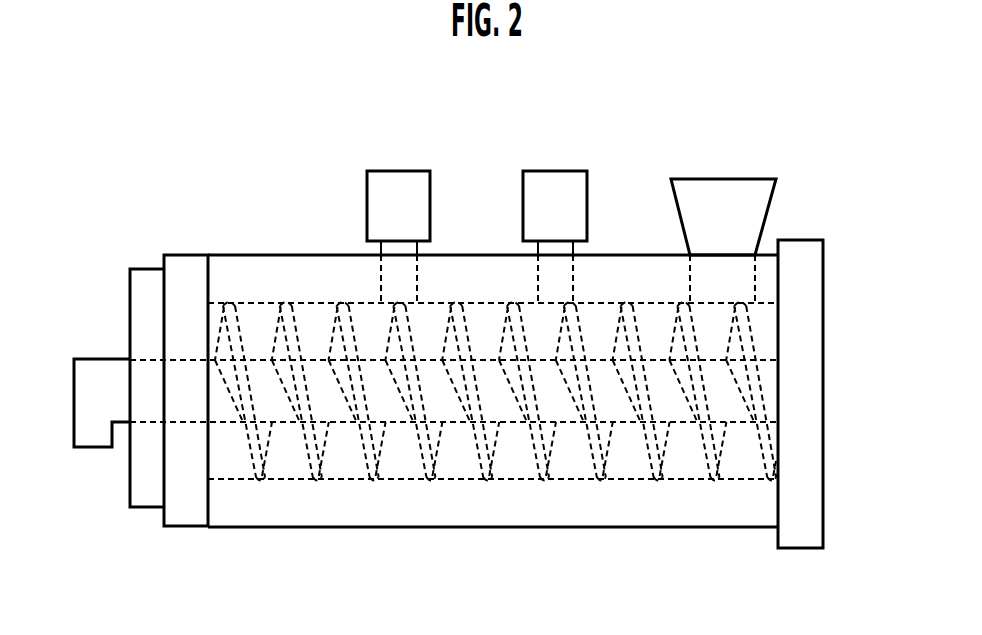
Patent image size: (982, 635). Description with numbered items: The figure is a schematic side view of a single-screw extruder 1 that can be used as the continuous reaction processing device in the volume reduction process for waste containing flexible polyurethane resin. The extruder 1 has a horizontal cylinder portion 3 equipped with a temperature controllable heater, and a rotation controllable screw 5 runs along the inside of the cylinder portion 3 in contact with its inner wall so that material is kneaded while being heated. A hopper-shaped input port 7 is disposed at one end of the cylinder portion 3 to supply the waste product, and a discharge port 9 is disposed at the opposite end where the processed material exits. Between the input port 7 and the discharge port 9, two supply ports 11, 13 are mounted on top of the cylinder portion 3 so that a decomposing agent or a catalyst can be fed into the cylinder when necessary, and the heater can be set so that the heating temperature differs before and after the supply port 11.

The extruder 1 is at (497, 147).
The cylinder portion 3 is at (403, 480).
The screw 5 is at (588, 455).
The input port 7 is at (722, 187).
The discharge port 9 is at (117, 428).
The supply port 11 is at (398, 178).
The supply port 13 is at (568, 178).